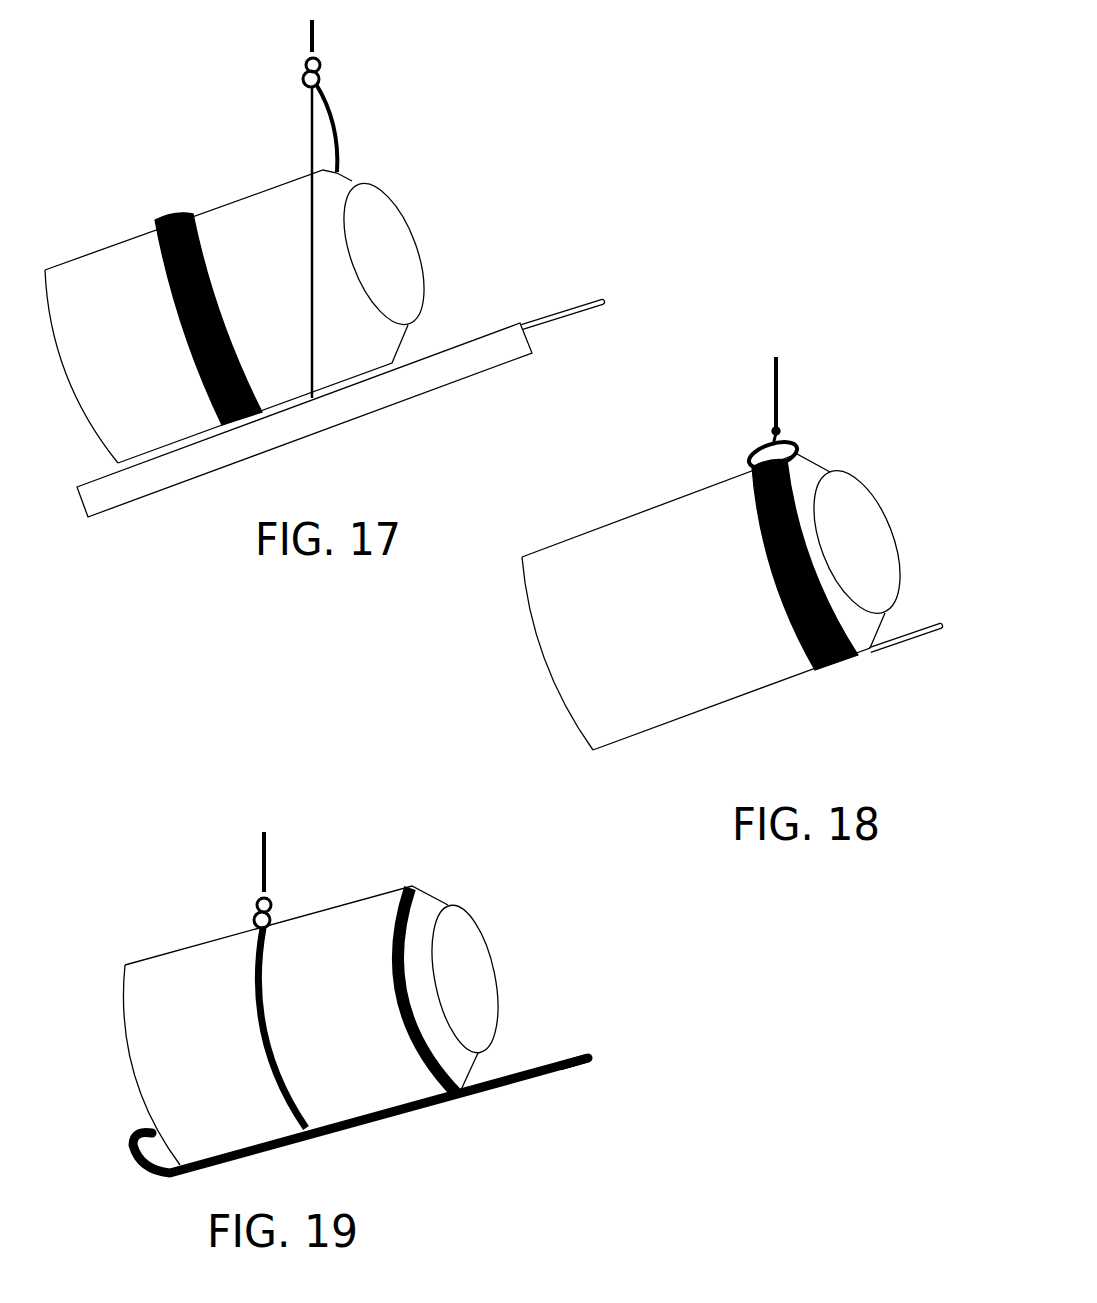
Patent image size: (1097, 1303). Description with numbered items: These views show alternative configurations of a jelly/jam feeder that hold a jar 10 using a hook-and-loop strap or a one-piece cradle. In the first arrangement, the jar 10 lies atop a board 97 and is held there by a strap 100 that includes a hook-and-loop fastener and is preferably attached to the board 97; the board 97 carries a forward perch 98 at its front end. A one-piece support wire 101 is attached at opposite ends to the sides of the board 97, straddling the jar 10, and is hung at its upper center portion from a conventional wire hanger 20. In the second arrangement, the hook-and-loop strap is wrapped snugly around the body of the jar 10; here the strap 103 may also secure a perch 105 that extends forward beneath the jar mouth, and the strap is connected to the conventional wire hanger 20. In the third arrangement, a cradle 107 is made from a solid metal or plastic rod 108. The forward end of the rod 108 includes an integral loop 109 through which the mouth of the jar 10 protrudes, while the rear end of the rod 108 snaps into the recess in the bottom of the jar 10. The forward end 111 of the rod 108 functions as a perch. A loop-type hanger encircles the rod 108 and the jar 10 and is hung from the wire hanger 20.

In FIG. 17, the jar 10 is at (158, 375).
In FIG. 18, the jar 10 is at (647, 649).
In FIG. 19, the jar 10 is at (225, 1066).
In FIG. 17, the wire hanger 20 is at (314, 41).
In FIG. 18, the wire hanger 20 is at (777, 392).
In FIG. 19, the wire hanger 20 is at (266, 848).
In FIG. 17, the board 97 is at (418, 395).
In FIG. 17, the forward perch 98 is at (606, 300).
In FIG. 17, the strap 100 is at (203, 300).
In FIG. 17, the support wire 101 is at (337, 130).
In FIG. 18, the band 103 is at (748, 502).
In FIG. 18, the perch 105 is at (941, 624).
In FIG. 19, the cradle 107 is at (318, 1112).
In FIG. 19, the rod 108 is at (405, 1113).
In FIG. 19, the integral loop 109 is at (412, 888).
In FIG. 19, the forward end 111 is at (588, 1056).